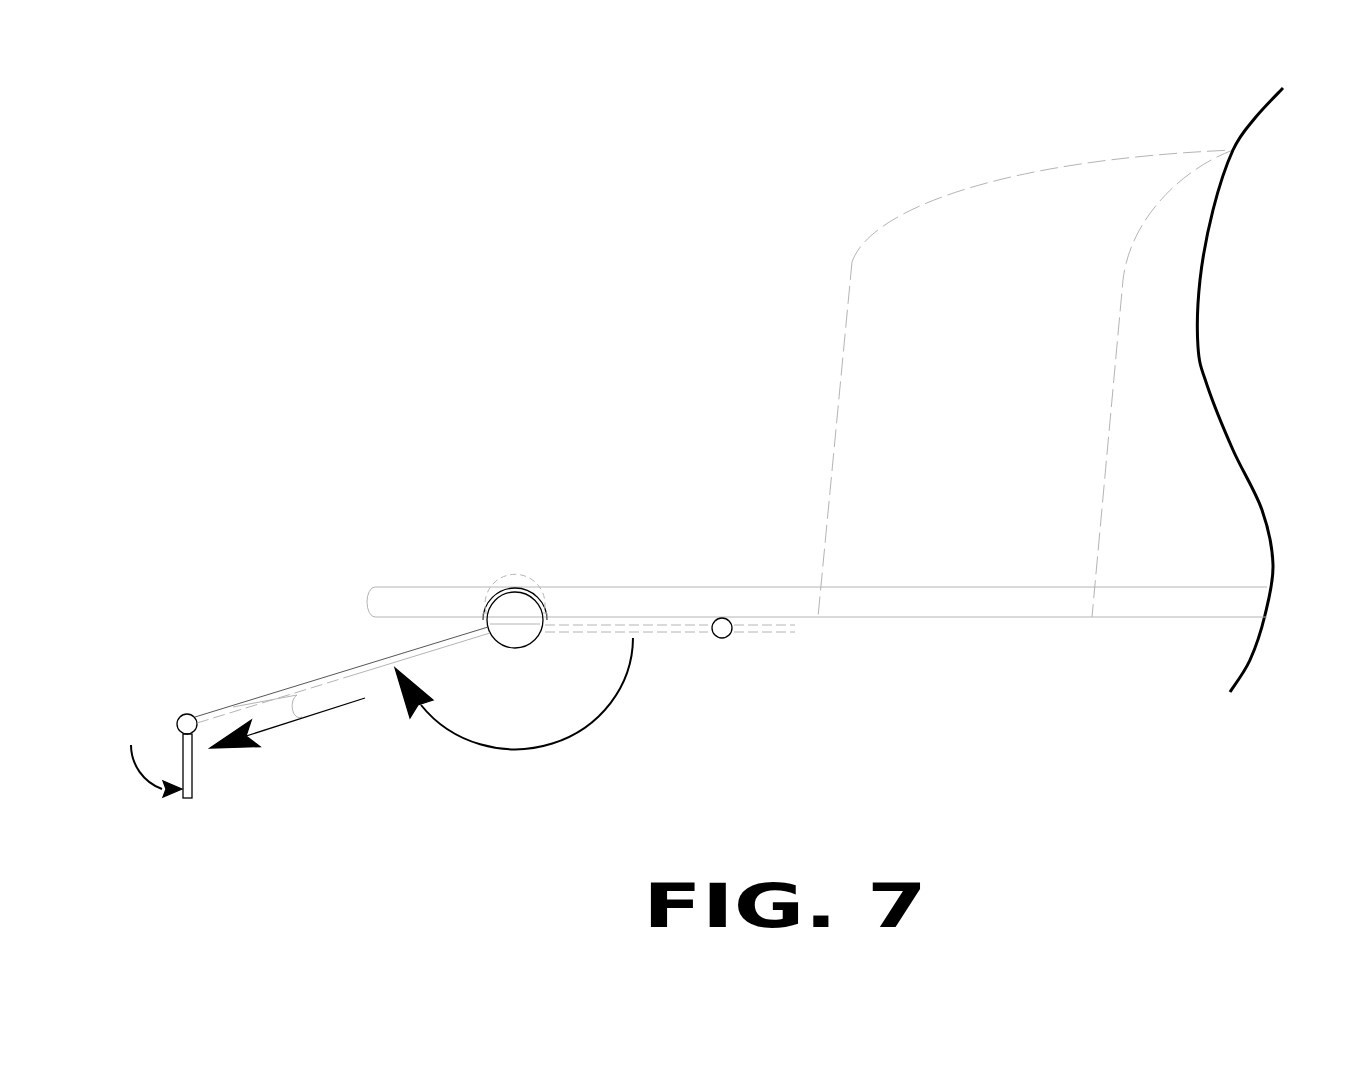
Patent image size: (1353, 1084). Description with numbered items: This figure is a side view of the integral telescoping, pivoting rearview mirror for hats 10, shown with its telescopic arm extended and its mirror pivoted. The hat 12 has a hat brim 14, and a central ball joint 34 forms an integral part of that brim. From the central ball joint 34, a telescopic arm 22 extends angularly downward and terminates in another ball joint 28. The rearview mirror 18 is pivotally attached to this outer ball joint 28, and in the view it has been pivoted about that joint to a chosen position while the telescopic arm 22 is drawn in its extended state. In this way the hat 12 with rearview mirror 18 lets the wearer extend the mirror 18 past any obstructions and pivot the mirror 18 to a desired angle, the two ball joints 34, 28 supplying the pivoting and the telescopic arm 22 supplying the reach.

The integral telescoping, pivoting rearview mirror for hats 10 is at (322, 250).
The hat 12 is at (852, 262).
The hat brim 14 is at (678, 587).
The rearview mirror 18 is at (195, 772).
The telescopic arm 22 is at (260, 702).
The ball joint 28 is at (503, 602).
The central ball joint 34 is at (528, 607).